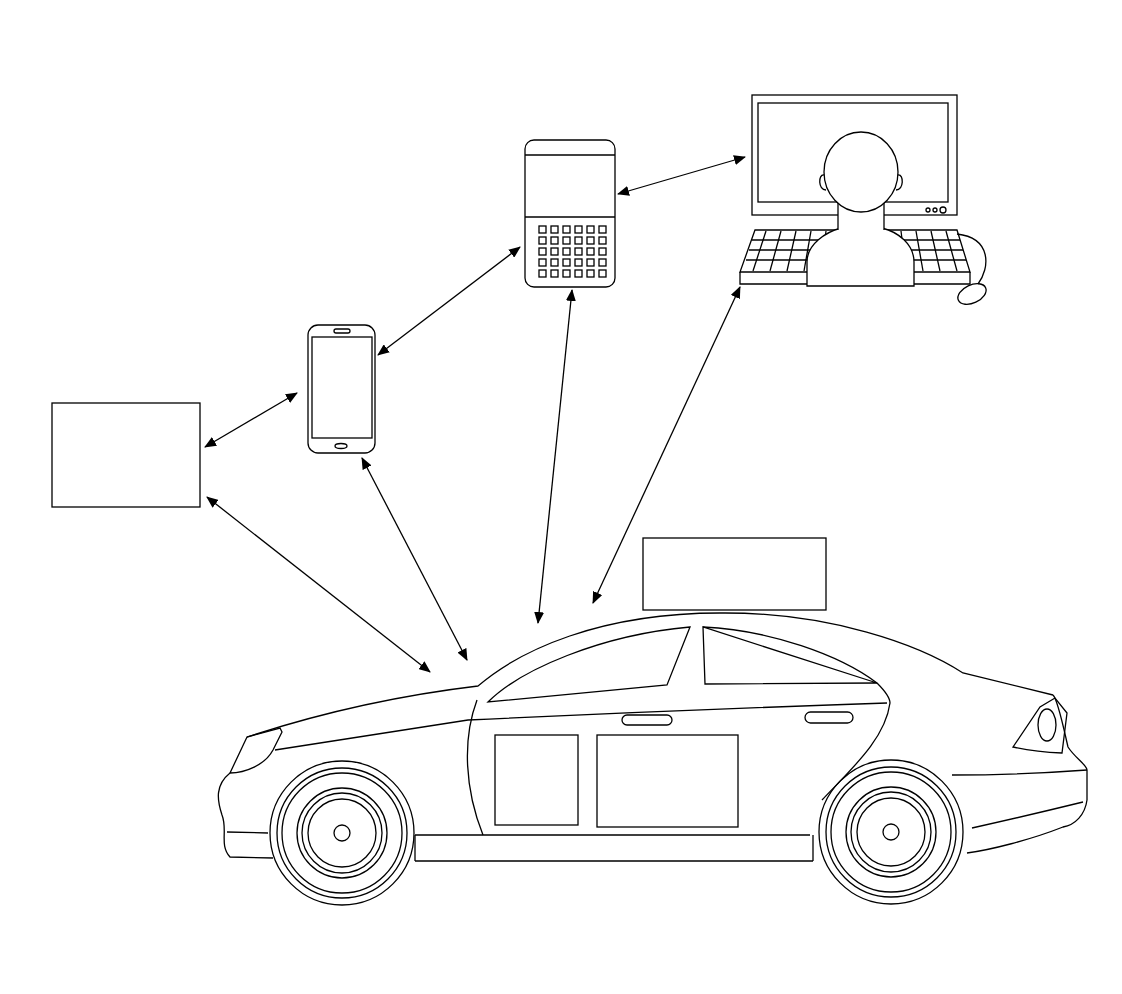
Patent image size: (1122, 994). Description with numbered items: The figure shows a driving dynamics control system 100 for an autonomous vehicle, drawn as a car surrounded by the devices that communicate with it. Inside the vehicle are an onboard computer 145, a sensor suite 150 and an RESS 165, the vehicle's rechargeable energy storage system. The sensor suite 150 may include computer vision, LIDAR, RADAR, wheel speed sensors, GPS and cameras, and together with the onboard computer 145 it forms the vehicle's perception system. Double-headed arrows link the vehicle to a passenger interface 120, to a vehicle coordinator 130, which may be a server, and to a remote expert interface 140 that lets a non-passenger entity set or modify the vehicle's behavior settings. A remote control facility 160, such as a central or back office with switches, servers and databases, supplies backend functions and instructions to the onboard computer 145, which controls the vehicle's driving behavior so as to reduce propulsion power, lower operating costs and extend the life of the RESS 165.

The driving dynamics control system 100 is at (1055, 95).
The passenger interface 120 is at (328, 325).
The vehicle coordinator 130 is at (552, 140).
The remote expert interface 140 is at (782, 95).
The onboard computer 145 is at (652, 817).
The sensor suite 150 is at (718, 602).
The remote control facility 160 is at (110, 494).
The RESS 165 is at (520, 806).